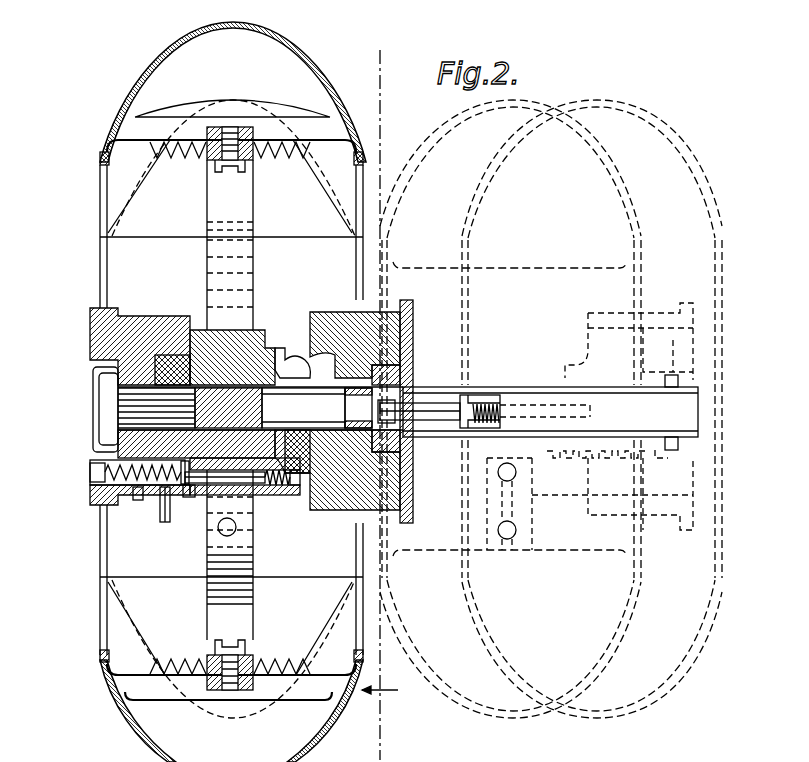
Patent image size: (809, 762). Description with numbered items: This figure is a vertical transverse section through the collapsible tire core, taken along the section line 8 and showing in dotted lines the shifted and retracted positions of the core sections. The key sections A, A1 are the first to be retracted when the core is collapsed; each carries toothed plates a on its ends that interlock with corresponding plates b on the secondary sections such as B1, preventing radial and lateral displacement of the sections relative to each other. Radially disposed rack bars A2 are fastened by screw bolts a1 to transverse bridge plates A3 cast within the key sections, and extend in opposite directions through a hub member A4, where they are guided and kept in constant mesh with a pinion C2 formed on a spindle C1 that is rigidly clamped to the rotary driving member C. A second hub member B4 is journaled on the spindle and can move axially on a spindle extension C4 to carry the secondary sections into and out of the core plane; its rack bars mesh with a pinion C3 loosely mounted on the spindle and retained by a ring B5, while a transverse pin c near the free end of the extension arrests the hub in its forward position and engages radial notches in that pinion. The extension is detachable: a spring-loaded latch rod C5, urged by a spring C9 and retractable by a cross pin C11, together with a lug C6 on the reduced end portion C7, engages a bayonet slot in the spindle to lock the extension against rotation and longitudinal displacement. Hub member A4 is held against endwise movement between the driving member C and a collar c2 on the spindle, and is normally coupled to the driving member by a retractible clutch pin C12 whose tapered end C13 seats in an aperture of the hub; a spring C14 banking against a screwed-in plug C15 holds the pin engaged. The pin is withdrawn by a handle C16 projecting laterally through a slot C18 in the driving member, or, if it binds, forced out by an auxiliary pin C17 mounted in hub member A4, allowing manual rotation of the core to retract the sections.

The section line 8 is at (380, 395).
The primary or key section A is at (317, 103).
The primary or key section A1 is at (297, 746).
The rack bar A2 is at (254, 228).
The transverse bridge plate A3 is at (218, 125).
The hub member A4 is at (258, 342).
The toothed plate a is at (167, 222).
The screw bolt a1 is at (216, 172).
The toothed plate b is at (281, 139).
The supplemental or secondary core section B1 is at (122, 290).
The hub member B4 is at (322, 330).
The ring B5 is at (408, 372).
The rotary support or driving member C is at (133, 328).
The pin c is at (655, 412).
The spindle C1 is at (303, 408).
The pinion C2 is at (198, 335).
The collar c2 is at (272, 368).
The pinion C3 is at (407, 352).
The spindle extension C4 is at (578, 394).
The latch rod C5 is at (420, 405).
The lug C6 is at (410, 438).
The reduced end portion C7 is at (358, 408).
The spring C9 is at (492, 404).
The cross pin C11 is at (466, 397).
The clutch pin C12 is at (140, 500).
The tapered end C13 is at (192, 497).
The spring C14 is at (110, 462).
The plug C15 is at (95, 472).
The handle C16 is at (163, 522).
The auxiliary pin C17 is at (256, 474).
The slot C18 is at (130, 497).